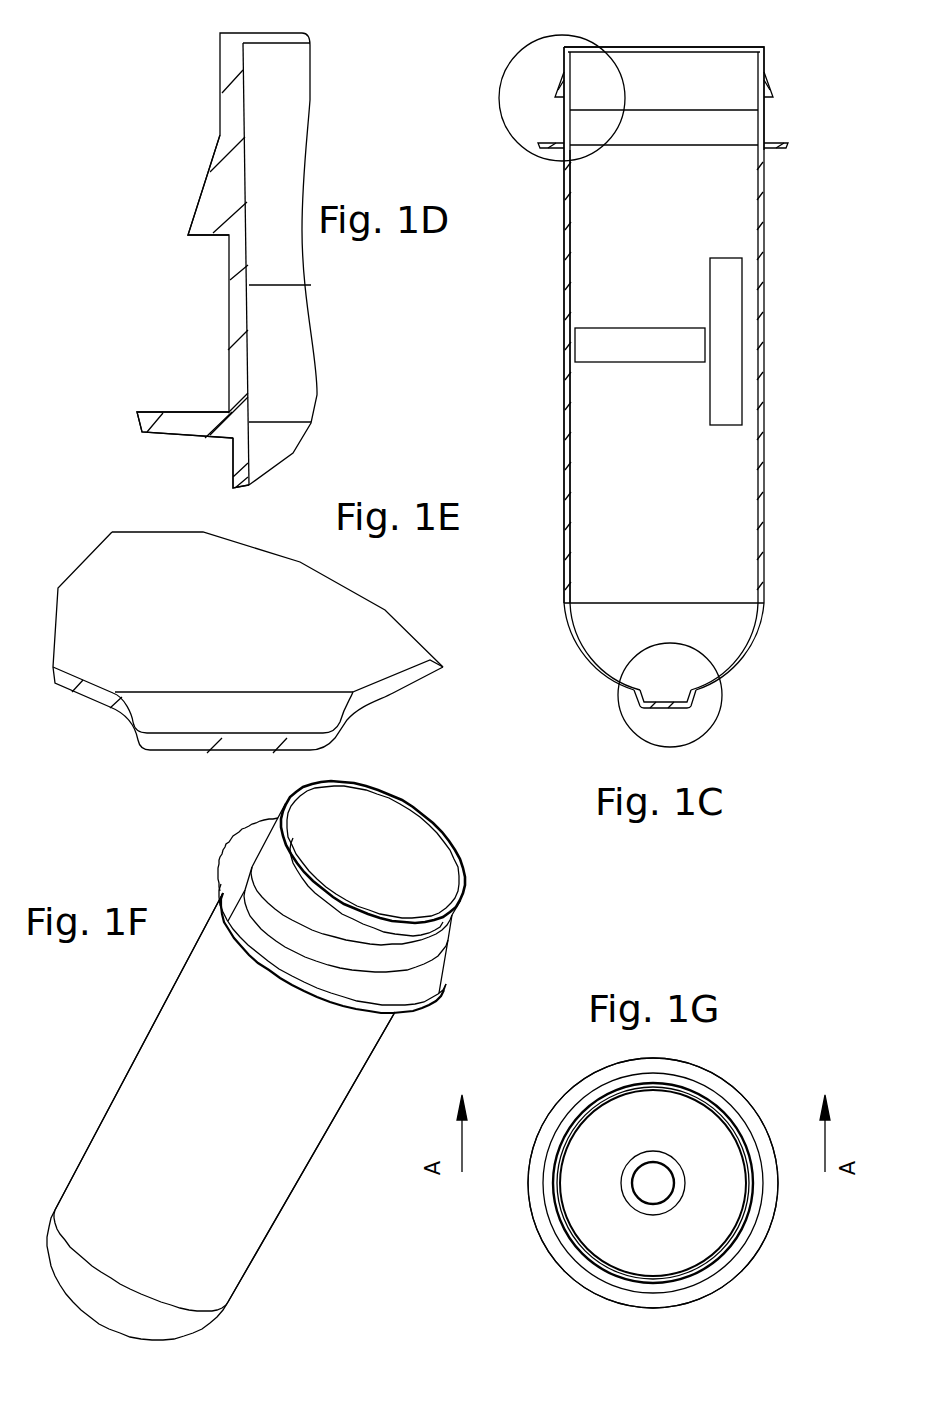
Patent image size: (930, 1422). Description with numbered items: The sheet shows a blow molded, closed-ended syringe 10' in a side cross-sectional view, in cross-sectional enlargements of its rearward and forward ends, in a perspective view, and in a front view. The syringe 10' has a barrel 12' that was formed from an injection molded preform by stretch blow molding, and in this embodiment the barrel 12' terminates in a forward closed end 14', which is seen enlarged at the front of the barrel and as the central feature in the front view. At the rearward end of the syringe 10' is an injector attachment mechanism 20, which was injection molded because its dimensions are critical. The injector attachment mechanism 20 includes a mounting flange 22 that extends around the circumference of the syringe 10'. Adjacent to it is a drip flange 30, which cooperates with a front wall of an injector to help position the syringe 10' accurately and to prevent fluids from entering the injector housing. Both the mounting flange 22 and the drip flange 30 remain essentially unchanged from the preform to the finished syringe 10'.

In FIG. 1C, the syringe 10' is at (588, 391).
In FIG. 1F, the syringe 10' is at (206, 1116).
In FIG. 1G, the syringe 10' is at (607, 1190).
In FIG. 1D, the barrel 12' is at (167, 471).
In FIG. 1C, the barrel 12' is at (711, 376).
In FIG. 1F, the barrel 12' is at (224, 1102).
In FIG. 1G, the barrel 12' is at (630, 1214).
In FIG. 1E, the forward closed end 14' is at (248, 690).
In FIG. 1C, the forward closed end 14' is at (618, 738).
In FIG. 1G, the forward closed end 14' is at (693, 1242).
In FIG. 1D, the injector attachment mechanism 20 is at (115, 217).
In FIG. 1C, the injector attachment mechanism 20 is at (790, 96).
In FIG. 1F, the injector attachment mechanism 20 is at (250, 818).
In FIG. 1D, the flange 22 is at (185, 200).
In FIG. 1C, the flange 22 is at (555, 97).
In FIG. 1F, the flange 22 is at (448, 943).
In FIG. 1D, the drip flange 30 is at (135, 395).
In FIG. 1C, the drip flange 30 is at (528, 140).
In FIG. 1F, the drip flange 30 is at (447, 988).
In FIG. 1G, the drip flange 30 is at (710, 1078).